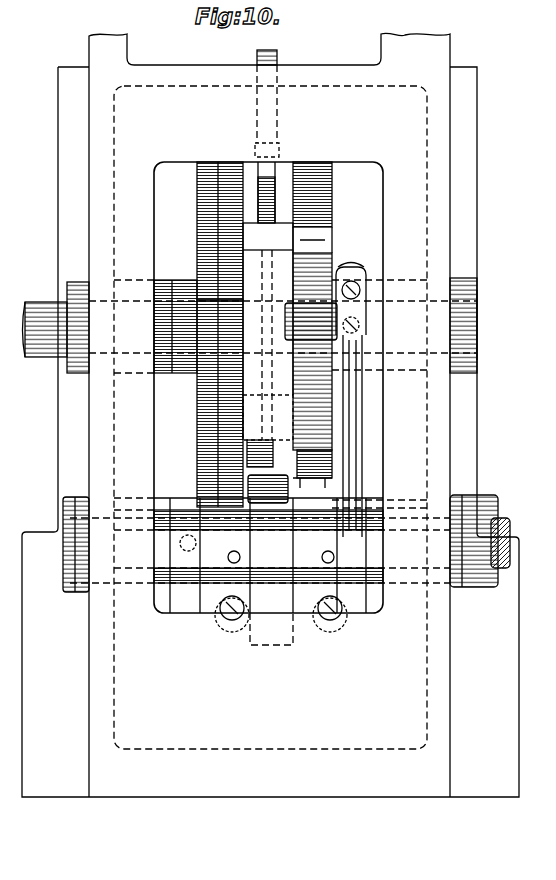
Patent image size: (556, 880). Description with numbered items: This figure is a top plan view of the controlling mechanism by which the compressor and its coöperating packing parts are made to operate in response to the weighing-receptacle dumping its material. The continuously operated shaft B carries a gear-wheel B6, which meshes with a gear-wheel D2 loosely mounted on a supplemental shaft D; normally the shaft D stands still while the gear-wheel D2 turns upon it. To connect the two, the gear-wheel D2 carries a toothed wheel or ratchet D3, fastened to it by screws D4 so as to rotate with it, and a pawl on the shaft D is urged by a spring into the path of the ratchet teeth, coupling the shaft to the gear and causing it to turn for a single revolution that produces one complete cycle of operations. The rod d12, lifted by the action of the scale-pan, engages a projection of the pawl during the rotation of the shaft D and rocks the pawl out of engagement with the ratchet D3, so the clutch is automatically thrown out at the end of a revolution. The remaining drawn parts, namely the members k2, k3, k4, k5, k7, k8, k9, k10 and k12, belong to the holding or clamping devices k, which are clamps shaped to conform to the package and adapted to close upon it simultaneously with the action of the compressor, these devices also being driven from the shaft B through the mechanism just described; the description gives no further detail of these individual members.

The rod d12 is at (273, 107).
The clutch sleeve k7 is at (276, 155).
The gear k2 is at (332, 197).
The hub k12 is at (313, 297).
The screws D4 is at (197, 252).
The toothed wheel or ratchet D3 is at (243, 374).
The gear-wheel D2 is at (197, 422).
The gear k5 is at (312, 351).
The gear k4 is at (327, 423).
The gear k3 is at (330, 457).
The pinion k8 is at (280, 491).
The lever k10 is at (357, 420).
The supplemental shaft D is at (478, 314).
The gear-wheel B6 is at (200, 497).
The shaft B is at (505, 520).
The hub k9 is at (460, 520).